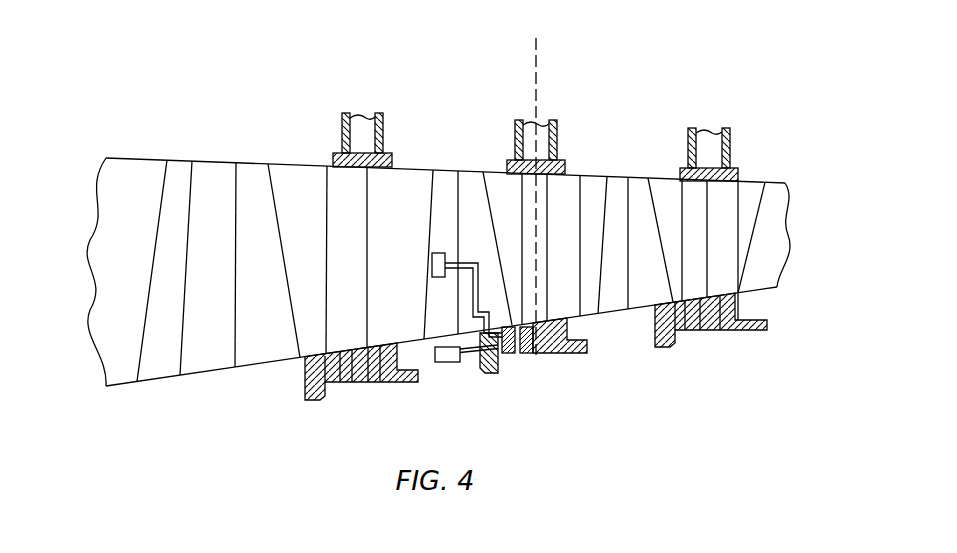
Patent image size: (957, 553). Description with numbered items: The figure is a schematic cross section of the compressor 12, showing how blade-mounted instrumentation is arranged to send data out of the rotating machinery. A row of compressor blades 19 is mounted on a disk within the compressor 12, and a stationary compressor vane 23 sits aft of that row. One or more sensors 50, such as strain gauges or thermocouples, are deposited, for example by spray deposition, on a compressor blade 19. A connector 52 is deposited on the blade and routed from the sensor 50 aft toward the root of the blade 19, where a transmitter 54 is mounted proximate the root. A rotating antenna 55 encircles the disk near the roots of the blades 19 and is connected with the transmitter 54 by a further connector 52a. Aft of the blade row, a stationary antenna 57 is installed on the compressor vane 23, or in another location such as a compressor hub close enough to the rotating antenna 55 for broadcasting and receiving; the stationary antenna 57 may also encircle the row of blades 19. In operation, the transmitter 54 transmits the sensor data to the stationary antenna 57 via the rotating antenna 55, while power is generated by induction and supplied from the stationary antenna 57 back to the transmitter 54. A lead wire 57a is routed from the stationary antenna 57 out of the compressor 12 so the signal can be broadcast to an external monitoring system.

The compressor 12 is at (262, 142).
The compressor blade 19 is at (226, 218).
The compressor vane 23 is at (361, 218).
The sensor 50 is at (458, 245).
The connector 52 is at (470, 262).
The connector 52a is at (468, 353).
The transmitter 54 is at (447, 362).
The rotating antenna 55 is at (507, 357).
The stationary antenna 57 is at (523, 353).
The lead wire 57a is at (537, 65).